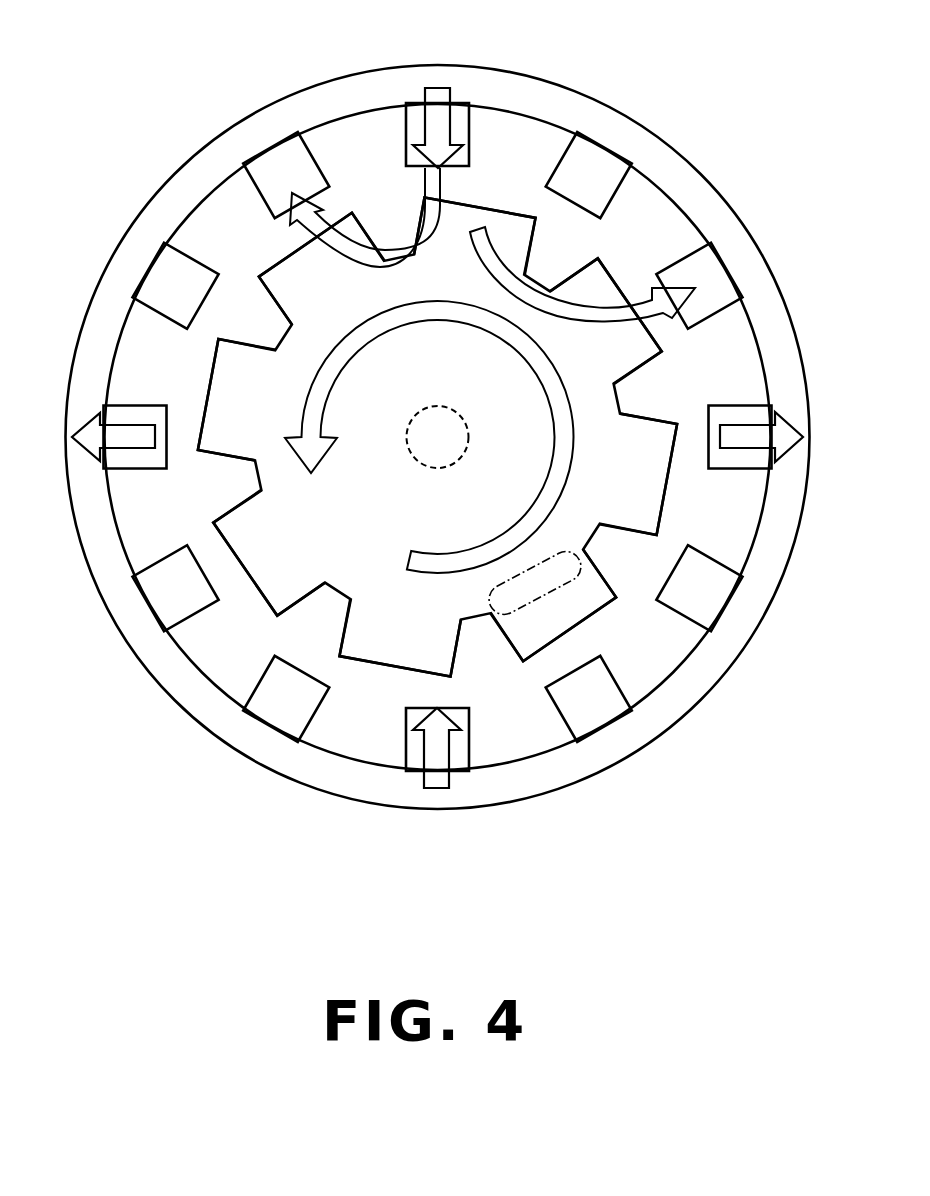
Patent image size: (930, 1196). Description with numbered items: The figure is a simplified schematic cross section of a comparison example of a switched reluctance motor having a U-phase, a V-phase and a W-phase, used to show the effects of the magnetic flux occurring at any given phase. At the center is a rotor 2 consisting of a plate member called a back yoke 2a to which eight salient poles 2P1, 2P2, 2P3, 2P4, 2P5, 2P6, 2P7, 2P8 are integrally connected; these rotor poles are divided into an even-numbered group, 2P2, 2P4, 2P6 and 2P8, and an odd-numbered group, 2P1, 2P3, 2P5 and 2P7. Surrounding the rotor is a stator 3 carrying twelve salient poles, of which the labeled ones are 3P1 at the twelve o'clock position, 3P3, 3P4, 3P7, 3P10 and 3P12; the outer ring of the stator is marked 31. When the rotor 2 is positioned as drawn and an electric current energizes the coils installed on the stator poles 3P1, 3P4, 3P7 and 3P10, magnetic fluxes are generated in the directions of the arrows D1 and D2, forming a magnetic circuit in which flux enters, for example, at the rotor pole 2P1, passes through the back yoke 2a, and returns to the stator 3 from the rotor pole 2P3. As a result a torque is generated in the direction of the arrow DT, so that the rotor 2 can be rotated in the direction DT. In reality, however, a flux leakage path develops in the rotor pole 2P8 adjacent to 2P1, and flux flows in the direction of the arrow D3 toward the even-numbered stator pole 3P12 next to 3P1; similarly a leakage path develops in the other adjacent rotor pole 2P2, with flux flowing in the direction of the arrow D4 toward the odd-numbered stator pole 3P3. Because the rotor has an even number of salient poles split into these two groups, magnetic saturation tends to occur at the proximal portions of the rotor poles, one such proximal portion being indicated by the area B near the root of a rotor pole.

The rotor 2 is at (266, 634).
The back yoke 2a is at (410, 511).
The salient pole 2P1 is at (467, 218).
The salient pole 2P2 is at (662, 349).
The salient pole 2P3 is at (667, 488).
The salient pole 2P4 is at (530, 658).
The salient pole 2P5 is at (387, 666).
The salient pole 2P6 is at (252, 573).
The salient pole 2P7 is at (217, 442).
The salient pole 2P8 is at (300, 282).
The stator 3 is at (653, 154).
The stator yoke 31 is at (520, 742).
The salient pole 3P1 is at (405, 133).
The salient pole 3P3 is at (682, 257).
The salient pole 3P4 is at (742, 406).
The salient pole 3P7 is at (470, 748).
The salient pole 3P10 is at (126, 469).
The salient pole 3P12 is at (247, 187).
The area B is at (585, 620).
The arrow D1 is at (438, 441).
The arrow D2 is at (437, 437).
The arrow D3 is at (365, 237).
The arrow D4 is at (582, 295).
The arrow DT is at (429, 437).